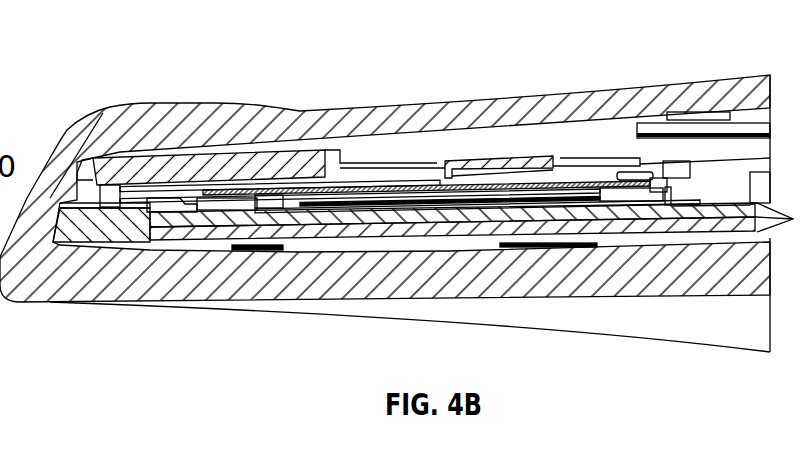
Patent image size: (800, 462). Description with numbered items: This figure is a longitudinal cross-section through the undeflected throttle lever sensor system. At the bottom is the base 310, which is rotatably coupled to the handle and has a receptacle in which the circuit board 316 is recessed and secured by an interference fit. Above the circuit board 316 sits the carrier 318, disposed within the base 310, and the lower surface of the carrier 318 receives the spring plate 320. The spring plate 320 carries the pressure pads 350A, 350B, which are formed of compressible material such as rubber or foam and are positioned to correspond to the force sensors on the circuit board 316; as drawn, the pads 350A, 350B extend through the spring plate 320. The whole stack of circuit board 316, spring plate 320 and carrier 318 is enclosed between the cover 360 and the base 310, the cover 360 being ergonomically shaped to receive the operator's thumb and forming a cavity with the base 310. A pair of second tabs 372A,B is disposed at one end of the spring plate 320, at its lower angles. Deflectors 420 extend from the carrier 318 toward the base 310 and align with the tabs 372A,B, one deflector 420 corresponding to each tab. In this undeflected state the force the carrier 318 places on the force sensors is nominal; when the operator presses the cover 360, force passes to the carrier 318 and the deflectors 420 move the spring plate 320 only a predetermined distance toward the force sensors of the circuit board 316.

The base 310 is at (98, 232).
The circuit board 316 is at (213, 217).
The carrier 318 is at (287, 162).
The spring plate 320 is at (383, 190).
The pressure pad 350A is at (280, 248).
The pressure pad 350B is at (633, 193).
The cover 360 is at (627, 102).
The second tabs 372A,B is at (670, 197).
The deflectors 420 is at (133, 187).